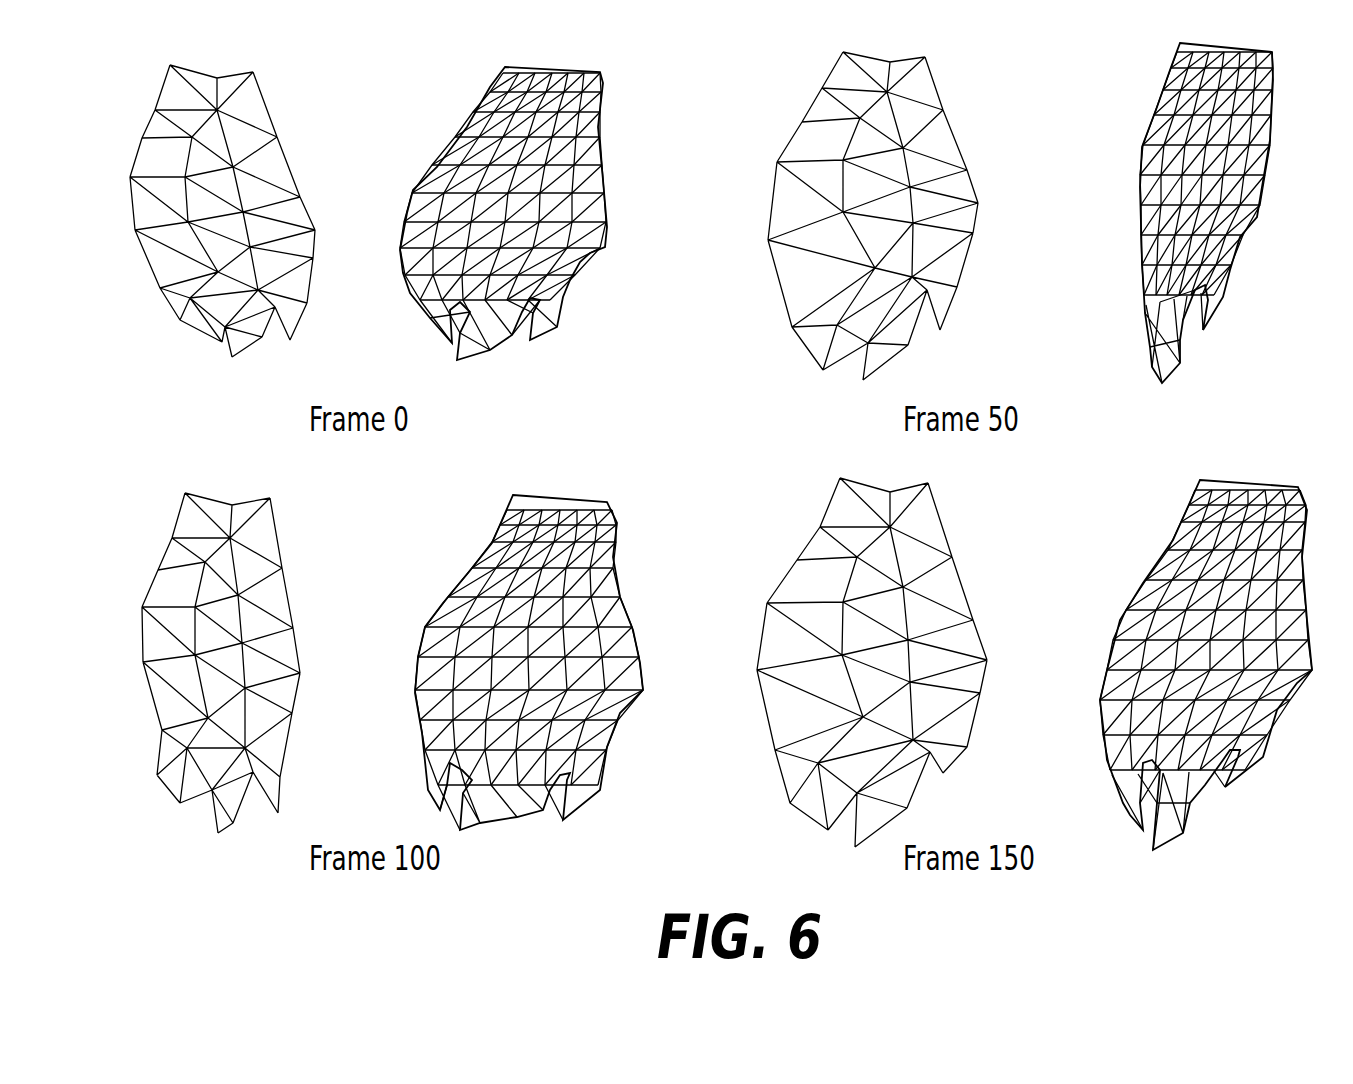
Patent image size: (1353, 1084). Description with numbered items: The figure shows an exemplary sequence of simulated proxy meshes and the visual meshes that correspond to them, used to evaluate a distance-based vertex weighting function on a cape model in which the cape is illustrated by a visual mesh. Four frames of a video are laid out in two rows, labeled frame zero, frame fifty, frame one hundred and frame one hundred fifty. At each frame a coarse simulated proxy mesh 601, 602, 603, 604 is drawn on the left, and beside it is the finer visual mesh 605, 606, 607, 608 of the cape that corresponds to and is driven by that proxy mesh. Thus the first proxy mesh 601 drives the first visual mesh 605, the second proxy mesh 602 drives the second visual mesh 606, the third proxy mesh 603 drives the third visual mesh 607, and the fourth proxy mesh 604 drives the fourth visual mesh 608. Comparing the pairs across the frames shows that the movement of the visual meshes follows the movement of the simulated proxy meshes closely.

The simulated proxy mesh 601 is at (165, 80).
The simulated proxy mesh 602 is at (826, 76).
The simulated proxy mesh 603 is at (172, 522).
The simulated proxy mesh 604 is at (830, 500).
The visual mesh 605 is at (492, 86).
The visual mesh 606 is at (1168, 76).
The visual mesh 607 is at (477, 549).
The visual mesh 608 is at (1185, 503).